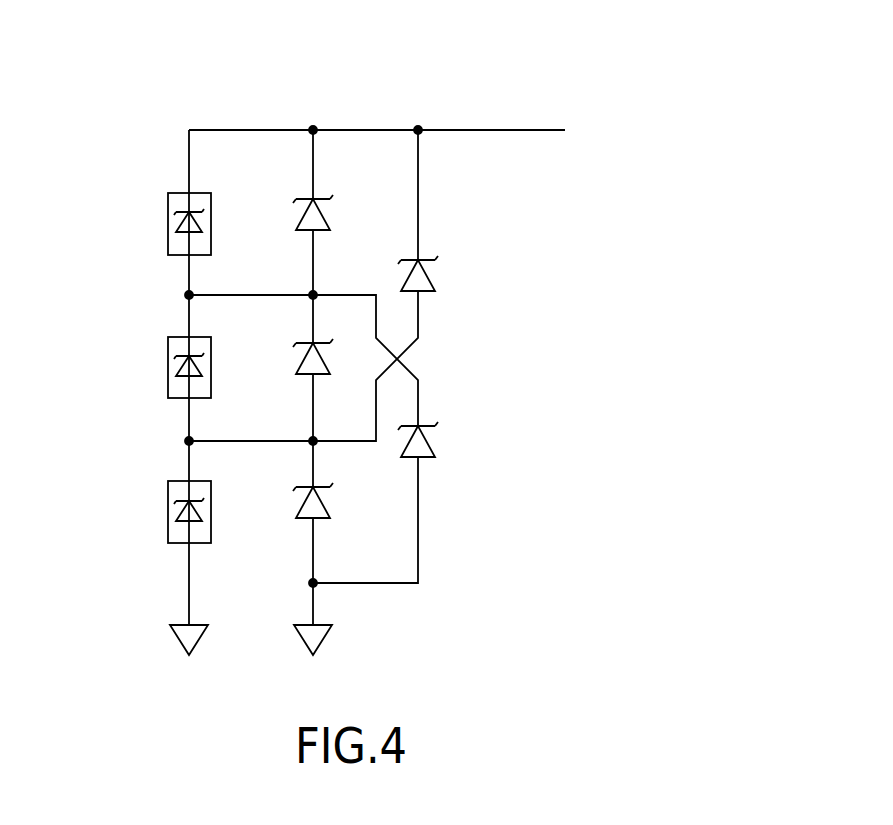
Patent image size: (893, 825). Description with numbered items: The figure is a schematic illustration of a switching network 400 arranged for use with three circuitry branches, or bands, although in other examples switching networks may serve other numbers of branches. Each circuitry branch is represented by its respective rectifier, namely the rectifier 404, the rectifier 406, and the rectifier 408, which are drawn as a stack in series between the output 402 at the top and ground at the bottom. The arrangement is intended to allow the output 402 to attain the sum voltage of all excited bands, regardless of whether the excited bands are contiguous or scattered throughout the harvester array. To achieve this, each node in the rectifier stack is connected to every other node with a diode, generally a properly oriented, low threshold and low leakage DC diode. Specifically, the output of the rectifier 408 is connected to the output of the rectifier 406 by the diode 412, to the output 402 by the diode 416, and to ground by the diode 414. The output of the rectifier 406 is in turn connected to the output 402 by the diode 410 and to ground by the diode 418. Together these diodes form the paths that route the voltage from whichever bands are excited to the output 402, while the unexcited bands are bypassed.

The switching network 400 is at (430, 58).
The output 402 is at (477, 130).
The rectifier 404 is at (130, 223).
The rectifier 406 is at (130, 368).
The rectifier 408 is at (130, 512).
The diode 410 is at (327, 213).
The diode 412 is at (300, 362).
The diode 414 is at (299, 510).
The diode 416 is at (428, 279).
The diode 418 is at (428, 447).